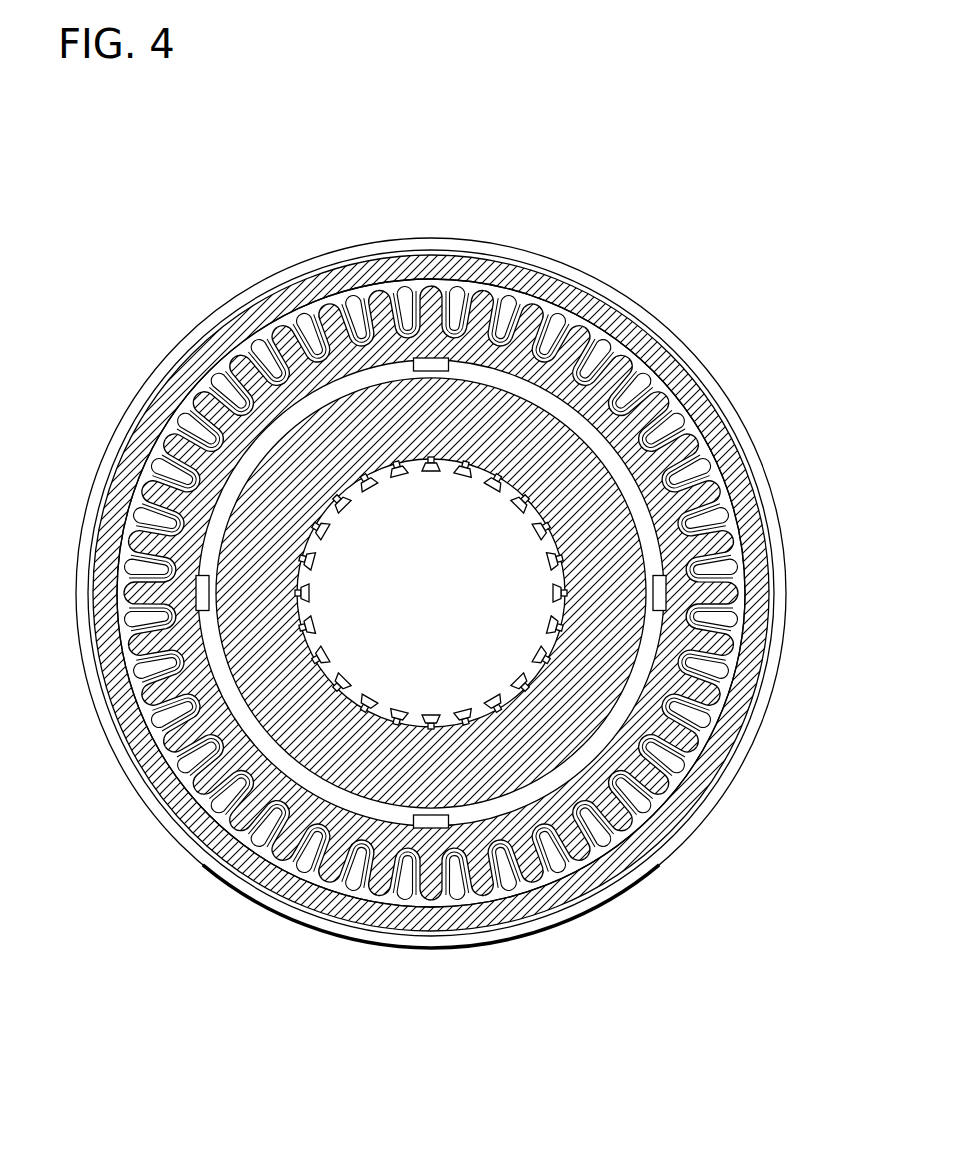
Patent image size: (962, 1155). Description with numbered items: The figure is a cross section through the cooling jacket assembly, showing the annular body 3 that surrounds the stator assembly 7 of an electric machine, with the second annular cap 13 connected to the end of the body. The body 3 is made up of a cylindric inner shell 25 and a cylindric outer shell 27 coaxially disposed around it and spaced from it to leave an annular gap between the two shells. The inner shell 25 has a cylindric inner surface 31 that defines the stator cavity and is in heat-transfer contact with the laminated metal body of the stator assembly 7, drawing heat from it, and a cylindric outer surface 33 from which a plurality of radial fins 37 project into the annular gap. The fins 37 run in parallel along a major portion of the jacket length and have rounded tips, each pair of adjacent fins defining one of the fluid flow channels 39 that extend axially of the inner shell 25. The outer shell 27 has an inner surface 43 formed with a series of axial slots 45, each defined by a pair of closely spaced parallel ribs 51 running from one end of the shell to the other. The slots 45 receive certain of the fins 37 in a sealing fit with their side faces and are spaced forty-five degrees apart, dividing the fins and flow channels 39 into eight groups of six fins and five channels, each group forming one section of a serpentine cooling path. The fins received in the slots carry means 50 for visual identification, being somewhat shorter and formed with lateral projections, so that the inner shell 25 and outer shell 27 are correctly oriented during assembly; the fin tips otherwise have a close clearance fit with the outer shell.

The annular body 3 is at (575, 261).
The stator assembly 7 is at (237, 708).
The second annular cap 13 is at (768, 441).
The cylindric inner shell 25 is at (720, 720).
The cylindric outer shell 27 is at (770, 505).
The cylindric inner surface 31 is at (745, 660).
The cylindric outer surface 33 is at (692, 768).
The radial fins 37 is at (272, 880).
The fluid flow channels 39 is at (362, 288).
The inner surface 43 is at (756, 556).
The axial slots 45 is at (670, 365).
The means for visual identification 50 is at (640, 345).
The parallel ribs 51 is at (445, 280).